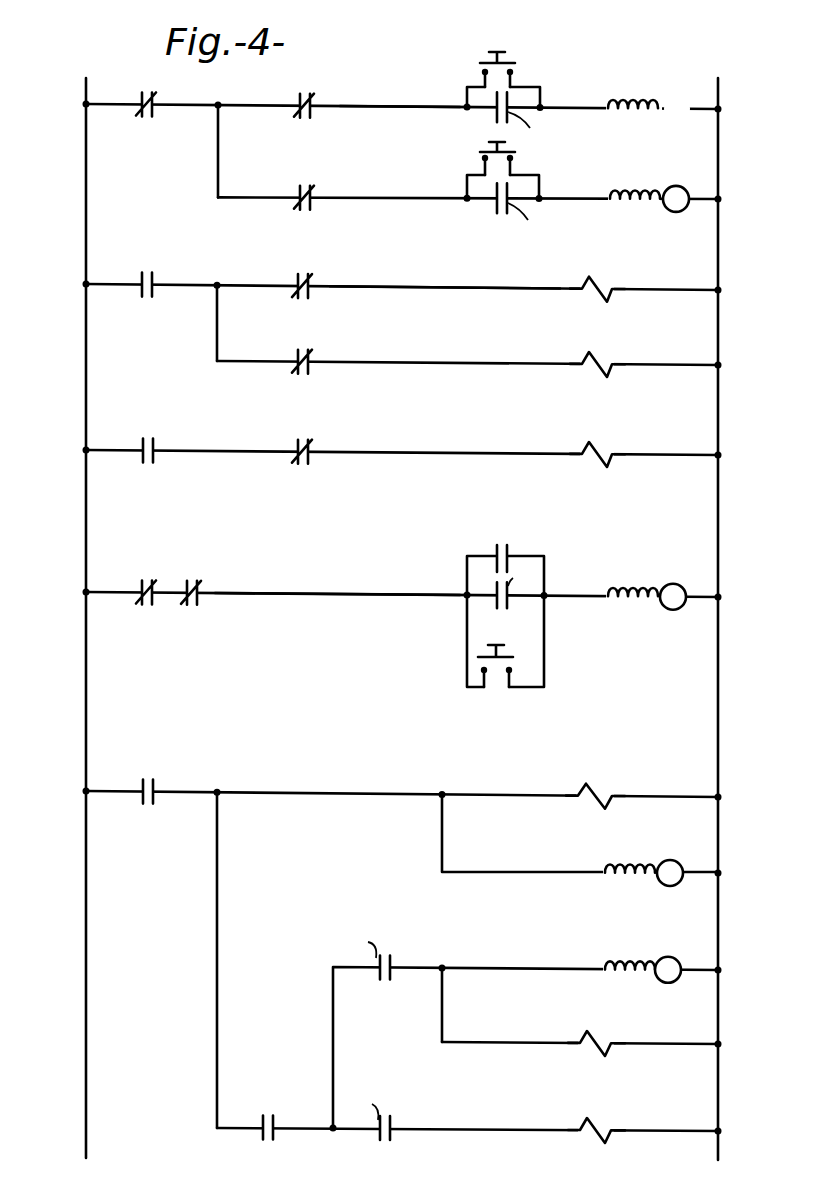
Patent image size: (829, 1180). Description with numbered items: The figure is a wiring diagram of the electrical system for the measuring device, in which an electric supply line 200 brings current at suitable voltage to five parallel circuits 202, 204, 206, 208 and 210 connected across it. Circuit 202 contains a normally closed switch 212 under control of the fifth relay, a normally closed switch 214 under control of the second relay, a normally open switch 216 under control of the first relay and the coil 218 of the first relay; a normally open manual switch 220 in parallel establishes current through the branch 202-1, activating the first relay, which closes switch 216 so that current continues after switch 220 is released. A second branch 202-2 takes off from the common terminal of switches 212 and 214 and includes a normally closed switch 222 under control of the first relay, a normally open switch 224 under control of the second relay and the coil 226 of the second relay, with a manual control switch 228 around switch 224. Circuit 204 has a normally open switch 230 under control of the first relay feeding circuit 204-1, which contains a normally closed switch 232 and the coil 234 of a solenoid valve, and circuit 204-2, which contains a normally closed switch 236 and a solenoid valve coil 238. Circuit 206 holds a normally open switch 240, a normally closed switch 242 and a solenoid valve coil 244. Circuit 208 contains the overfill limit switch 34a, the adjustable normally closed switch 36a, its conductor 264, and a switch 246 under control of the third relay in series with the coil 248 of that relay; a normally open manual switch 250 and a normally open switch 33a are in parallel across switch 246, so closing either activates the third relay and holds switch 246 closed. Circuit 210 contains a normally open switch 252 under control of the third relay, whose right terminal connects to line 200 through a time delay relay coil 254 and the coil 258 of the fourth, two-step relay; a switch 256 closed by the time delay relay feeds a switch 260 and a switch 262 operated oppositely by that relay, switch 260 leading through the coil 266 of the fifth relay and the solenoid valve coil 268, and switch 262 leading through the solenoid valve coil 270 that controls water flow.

The electric supply line 200 is at (86, 218).
The circuit 202 is at (104, 105).
The branch of circuit 202 202-1 is at (350, 105).
The second branch of circuit 202 202-2 is at (368, 198).
The circuit 204 is at (102, 285).
The circuit 204-1 is at (382, 287).
The circuit 204-2 is at (392, 362).
The circuit 206 is at (102, 451).
The circuit 208 is at (102, 593).
The circuit 210 is at (102, 792).
The normally closed switch 212 is at (153, 108).
The normally closed switch 214 is at (311, 110).
The normally open switch 216 is at (496, 110).
The coil of relay R-1 218 is at (624, 112).
The normally open manual switch 220 is at (515, 64).
The normally closed switch 222 is at (311, 202).
The normally open switch 224 is at (496, 202).
The coil of relay R-2 226 is at (626, 203).
The manual control switch 228 is at (513, 152).
The normally open switch 230 is at (153, 288).
The normally closed switch 232 is at (296, 284).
The coil of solenoid valve 168 234 is at (598, 282).
The normally closed switch 236 is at (296, 360).
The coil of solenoid valve 76a-1 238 is at (598, 358).
The normally open switch 240 is at (154, 454).
The normally closed switch 242 is at (296, 450).
The coil of solenoid valve 76a-2 244 is at (598, 448).
The normally closed switch 34a is at (142, 588).
The normally closed switch 36a is at (188, 588).
The conductor of circuit 208 264 is at (252, 593).
The switch 246 is at (496, 598).
The normally open switch 33a is at (507, 552).
The normally open manual control switch 250 is at (507, 651).
The coil of relay R-3 248 is at (620, 594).
The normally open switch 252 is at (158, 789).
The coil of time delay relay 254 is at (594, 784).
The coil of relay R-4 258 is at (624, 870).
The switch 260 is at (393, 962).
The coil of relay R-5 266 is at (606, 966).
The coil of solenoid valve 52a 268 is at (596, 1032).
The coil of solenoid valve 154 270 is at (596, 1119).
The switch 256 is at (274, 1122).
The switch 262 is at (393, 1123).